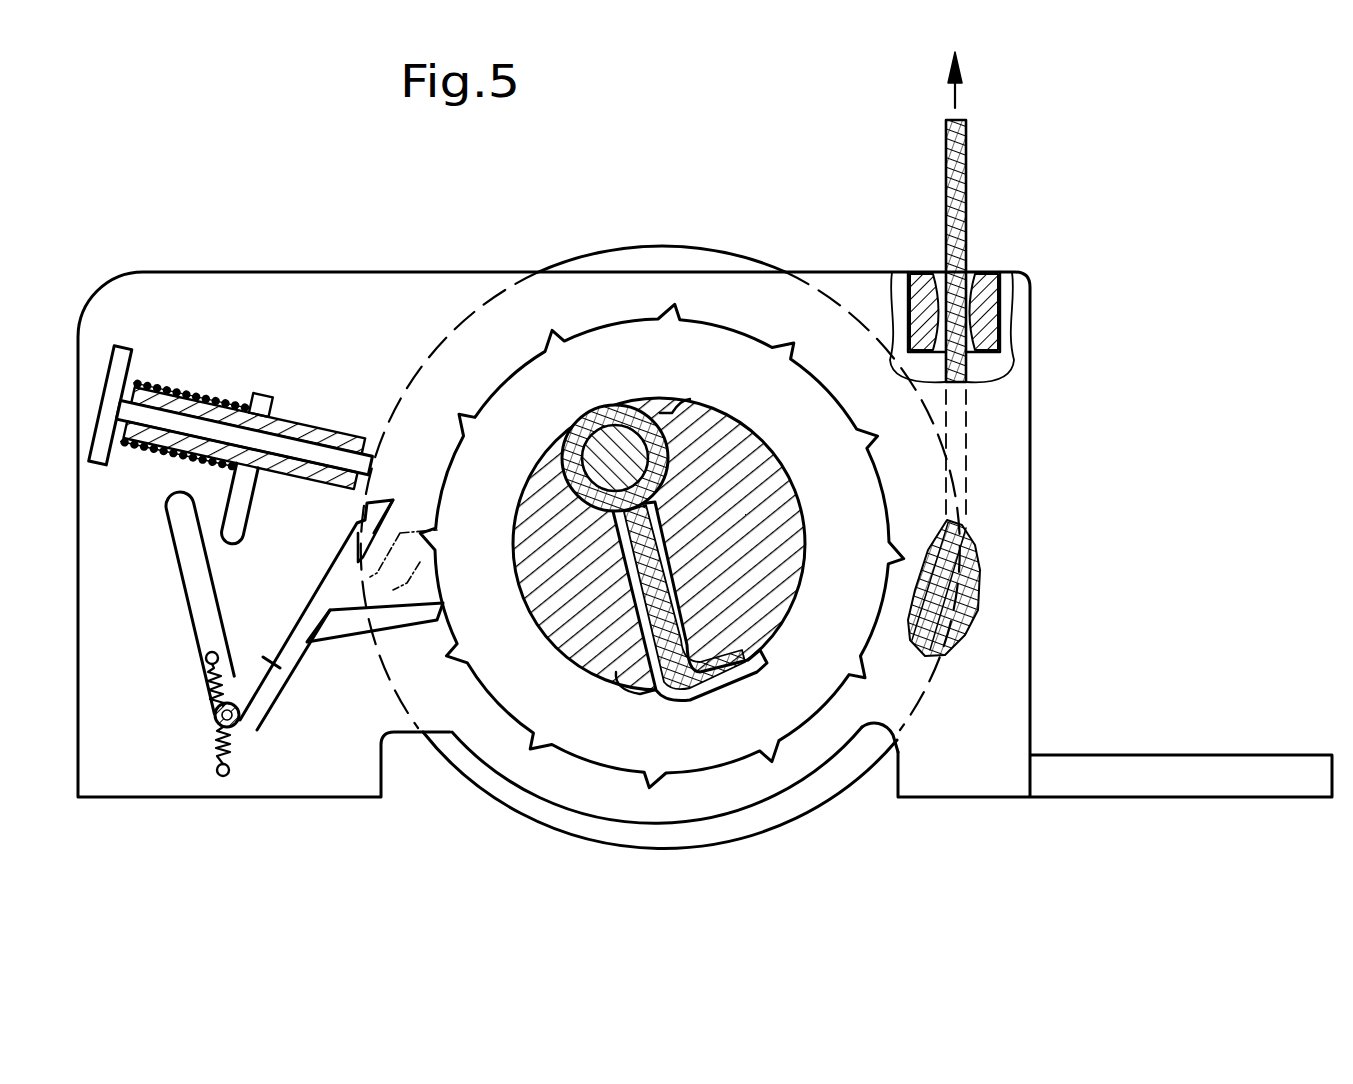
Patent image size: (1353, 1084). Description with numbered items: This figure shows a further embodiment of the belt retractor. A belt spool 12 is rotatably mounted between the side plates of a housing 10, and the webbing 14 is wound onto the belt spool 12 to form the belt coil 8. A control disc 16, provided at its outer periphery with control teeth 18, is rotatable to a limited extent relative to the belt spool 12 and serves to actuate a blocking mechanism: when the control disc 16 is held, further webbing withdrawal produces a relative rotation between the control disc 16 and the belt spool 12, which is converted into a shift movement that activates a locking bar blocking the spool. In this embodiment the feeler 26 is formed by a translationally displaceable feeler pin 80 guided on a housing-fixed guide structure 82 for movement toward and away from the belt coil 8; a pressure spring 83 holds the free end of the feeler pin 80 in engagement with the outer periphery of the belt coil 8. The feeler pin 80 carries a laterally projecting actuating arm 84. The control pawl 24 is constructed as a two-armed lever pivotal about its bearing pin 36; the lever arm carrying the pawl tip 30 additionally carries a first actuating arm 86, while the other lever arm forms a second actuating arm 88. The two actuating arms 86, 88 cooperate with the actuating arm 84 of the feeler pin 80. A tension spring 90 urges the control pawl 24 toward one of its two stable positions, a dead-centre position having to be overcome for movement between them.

The belt coil 8 is at (463, 775).
The housing 10 is at (1020, 360).
The belt spool 12 is at (793, 515).
The webbing 14 is at (964, 190).
The control disc 16 is at (805, 400).
The control teeth 18 is at (465, 410).
The lever 24 is at (298, 657).
The feeler 26 is at (262, 396).
The pawl tip 30 is at (397, 498).
The bearing pin 36 is at (238, 724).
The feeler pin 80 is at (324, 430).
The guide structure 82 is at (167, 420).
The upper spring 83 is at (205, 378).
The actuating arm 84 is at (243, 512).
The first actuating arm 86 is at (397, 615).
The second actuating arm 88 is at (193, 587).
The tension spring 90 is at (213, 733).